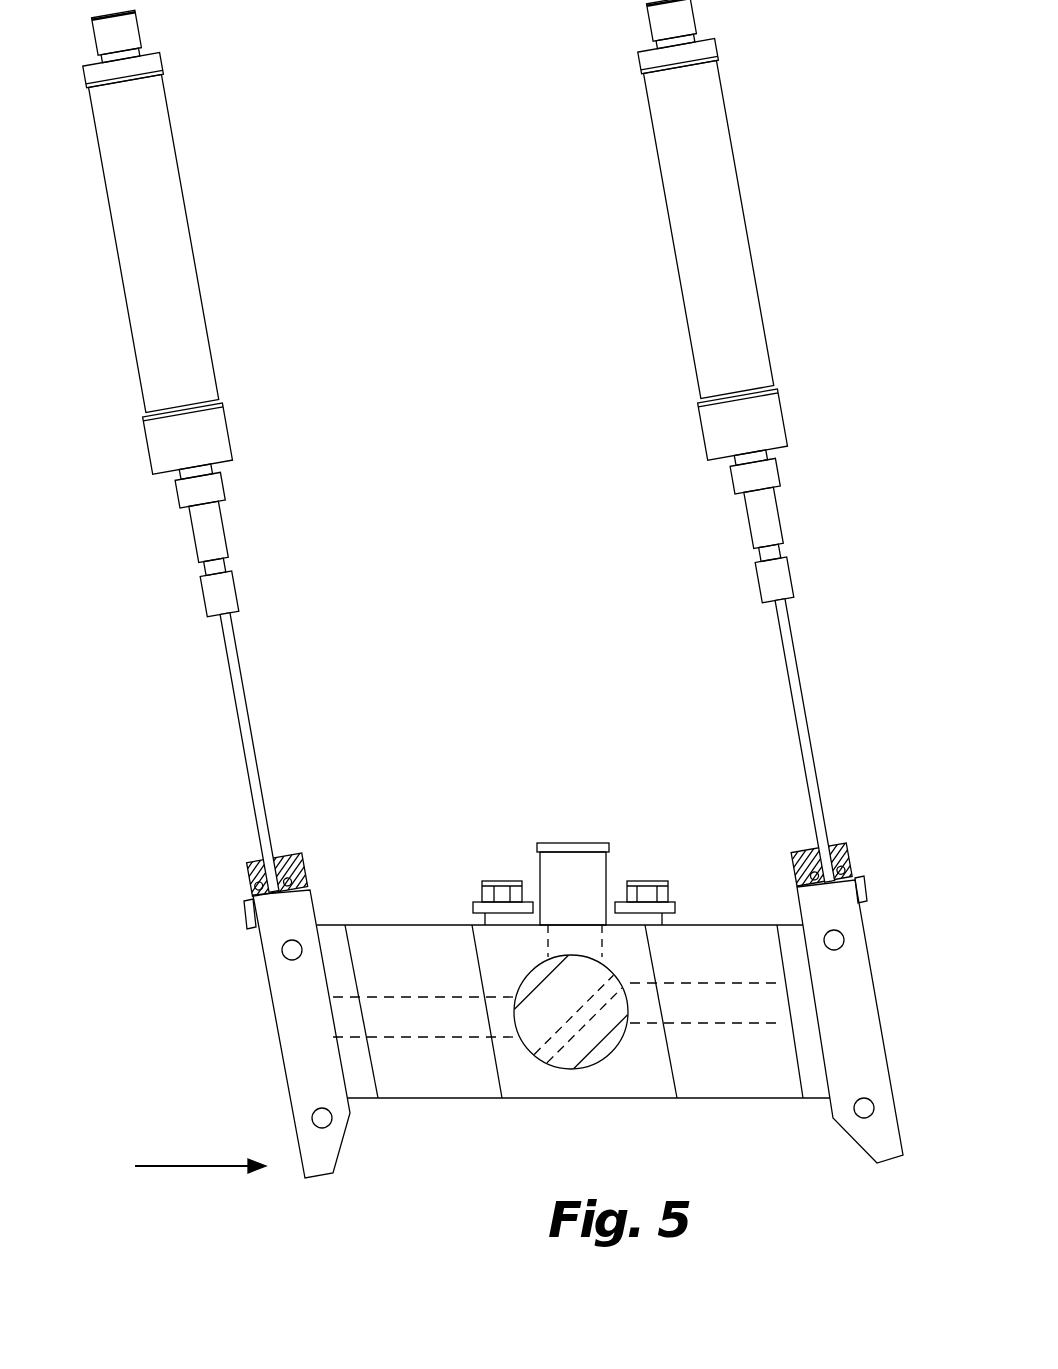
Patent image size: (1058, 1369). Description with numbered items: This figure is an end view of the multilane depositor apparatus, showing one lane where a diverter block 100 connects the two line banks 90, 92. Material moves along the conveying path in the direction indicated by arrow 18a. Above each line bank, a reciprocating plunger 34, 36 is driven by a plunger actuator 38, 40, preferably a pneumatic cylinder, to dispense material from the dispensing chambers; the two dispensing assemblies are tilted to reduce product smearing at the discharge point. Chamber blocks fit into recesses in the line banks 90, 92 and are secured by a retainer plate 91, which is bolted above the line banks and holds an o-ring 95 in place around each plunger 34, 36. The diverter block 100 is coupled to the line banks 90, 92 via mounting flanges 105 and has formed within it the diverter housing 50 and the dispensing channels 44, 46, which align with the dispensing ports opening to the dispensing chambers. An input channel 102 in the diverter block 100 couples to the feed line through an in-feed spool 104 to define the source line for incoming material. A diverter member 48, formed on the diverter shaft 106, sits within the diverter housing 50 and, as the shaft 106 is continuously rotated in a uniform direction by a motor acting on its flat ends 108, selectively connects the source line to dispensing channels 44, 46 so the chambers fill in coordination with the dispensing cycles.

The arrow 18a is at (150, 1166).
The reciprocating plunger 34 is at (245, 663).
The reciprocating plunger 36 is at (806, 645).
The plunger actuator 38 is at (185, 188).
The plunger actuator 40 is at (740, 180).
The dispensing channel 44 is at (410, 1037).
The dispensing channel 46 is at (698, 987).
The diverter member 48 is at (538, 1047).
The diverter housing 50 is at (530, 972).
The line bank 90 is at (268, 964).
The retainer plate 91 is at (250, 862).
The line bank 92 is at (852, 962).
The o-ring 95 is at (255, 885).
The diverter block 100 is at (386, 915).
The input channel 102 is at (600, 938).
The in-feed spool 104 is at (552, 832).
The mounting flange 105 is at (334, 915).
The diverter shaft 106 is at (622, 1038).
The flat end 108 is at (604, 1050).